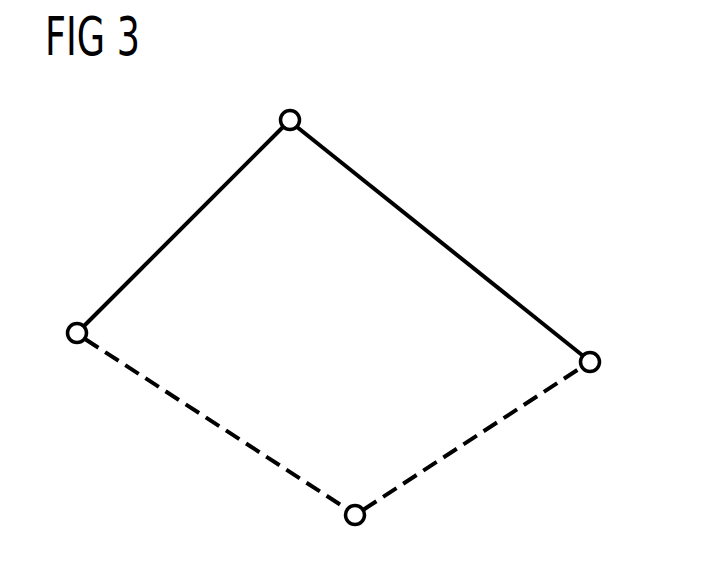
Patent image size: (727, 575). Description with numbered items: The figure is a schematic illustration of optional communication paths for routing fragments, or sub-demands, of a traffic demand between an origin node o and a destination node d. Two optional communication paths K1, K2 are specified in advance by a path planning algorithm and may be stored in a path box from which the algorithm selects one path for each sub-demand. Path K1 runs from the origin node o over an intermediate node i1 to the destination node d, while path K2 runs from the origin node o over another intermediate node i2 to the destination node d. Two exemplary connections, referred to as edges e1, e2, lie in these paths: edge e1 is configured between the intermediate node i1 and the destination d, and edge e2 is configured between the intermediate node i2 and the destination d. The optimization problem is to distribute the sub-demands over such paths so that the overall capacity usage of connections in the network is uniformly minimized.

The optional communication path K1 is at (163, 212).
The edge e1 is at (464, 224).
The optional communication path K2 is at (194, 441).
The edge e2 is at (496, 453).
The intermediate node i1 is at (287, 99).
The intermediate node i2 is at (357, 534).
The origin node o is at (66, 331).
The destination node d is at (603, 362).